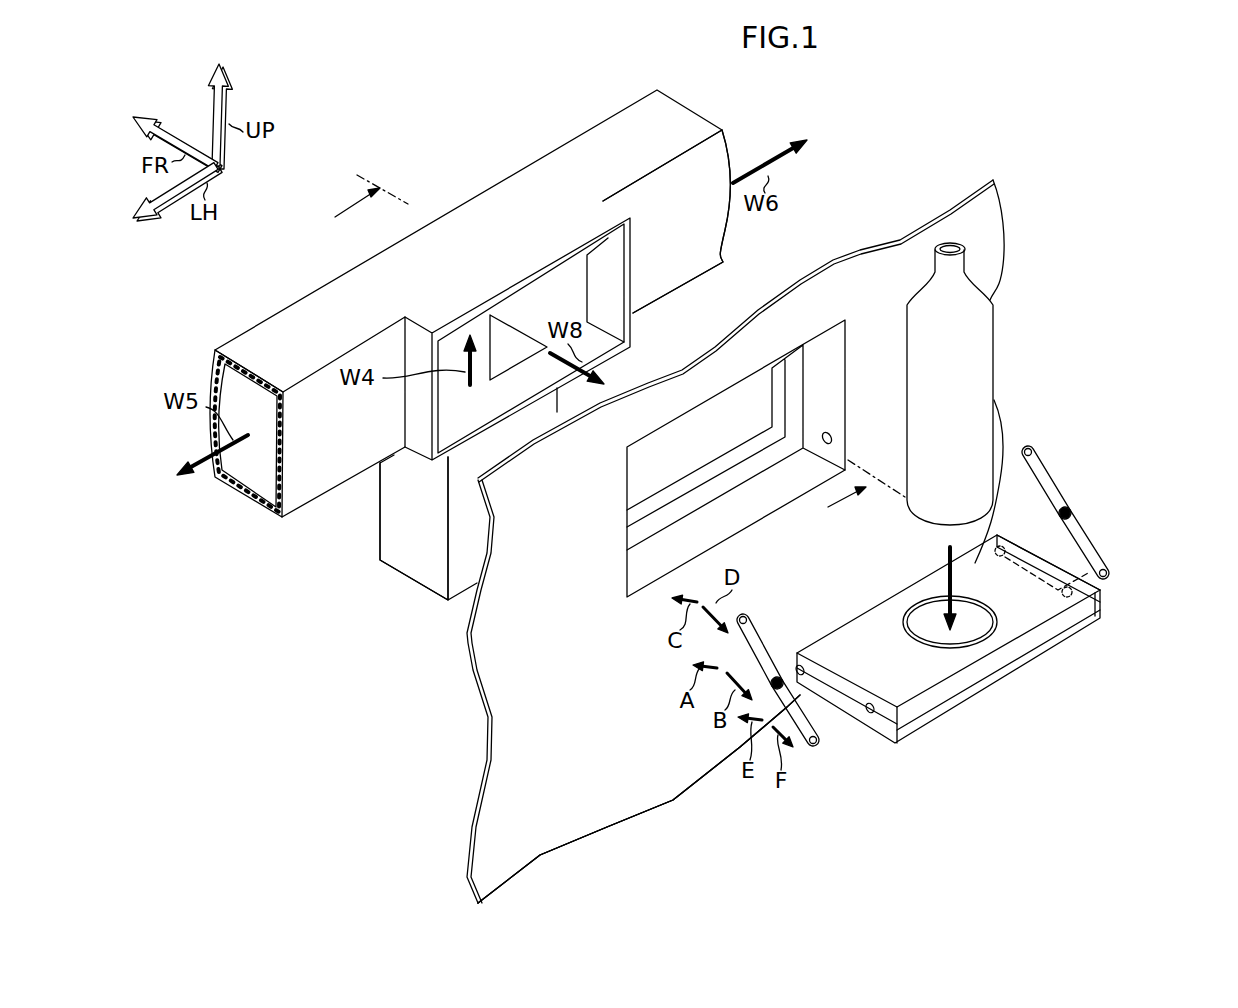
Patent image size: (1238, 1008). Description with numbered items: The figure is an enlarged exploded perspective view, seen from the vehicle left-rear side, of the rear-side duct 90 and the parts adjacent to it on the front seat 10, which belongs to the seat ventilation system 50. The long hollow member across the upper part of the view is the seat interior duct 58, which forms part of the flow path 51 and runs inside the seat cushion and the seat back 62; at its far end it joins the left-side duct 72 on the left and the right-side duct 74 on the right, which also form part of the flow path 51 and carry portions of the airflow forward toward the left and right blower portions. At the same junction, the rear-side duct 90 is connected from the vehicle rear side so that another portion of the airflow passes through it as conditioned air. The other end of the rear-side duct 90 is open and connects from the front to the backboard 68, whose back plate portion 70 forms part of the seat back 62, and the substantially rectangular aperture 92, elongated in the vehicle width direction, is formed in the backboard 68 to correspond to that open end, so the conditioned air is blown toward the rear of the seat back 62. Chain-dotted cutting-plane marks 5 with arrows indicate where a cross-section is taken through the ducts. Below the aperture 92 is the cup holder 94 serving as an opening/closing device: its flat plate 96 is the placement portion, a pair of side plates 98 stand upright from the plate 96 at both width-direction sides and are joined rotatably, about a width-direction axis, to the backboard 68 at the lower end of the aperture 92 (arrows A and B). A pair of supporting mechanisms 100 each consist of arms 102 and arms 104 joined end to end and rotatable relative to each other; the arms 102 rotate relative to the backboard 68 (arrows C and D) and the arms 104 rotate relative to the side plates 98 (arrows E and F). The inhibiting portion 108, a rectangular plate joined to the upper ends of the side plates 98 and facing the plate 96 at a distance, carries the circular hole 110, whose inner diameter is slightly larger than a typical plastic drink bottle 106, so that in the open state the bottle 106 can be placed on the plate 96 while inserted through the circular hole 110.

The front seat 10 is at (735, 541).
The seat ventilation system 50 is at (477, 156).
The flow path 51 is at (397, 540).
The seat interior duct 58 is at (410, 570).
The seat back 62 is at (815, 541).
The backboard 68 is at (642, 788).
The back plate portion 70 is at (597, 817).
The left-side duct 72 is at (307, 493).
The right-side duct 74 is at (692, 268).
The rear-side duct 90 is at (413, 330).
The aperture 92 is at (826, 378).
The cup holder 94 is at (949, 683).
The plate 96 is at (945, 710).
The side plates 98 is at (1085, 625).
The supporting mechanisms 100 is at (953, 585).
The arms 102 is at (768, 638).
The arms 104 is at (818, 718).
The plastic drink bottle 106 is at (985, 362).
The inhibiting portion 108 is at (1020, 625).
The circular hole 110 is at (978, 538).
The section line 5- 5 is at (613, 351).